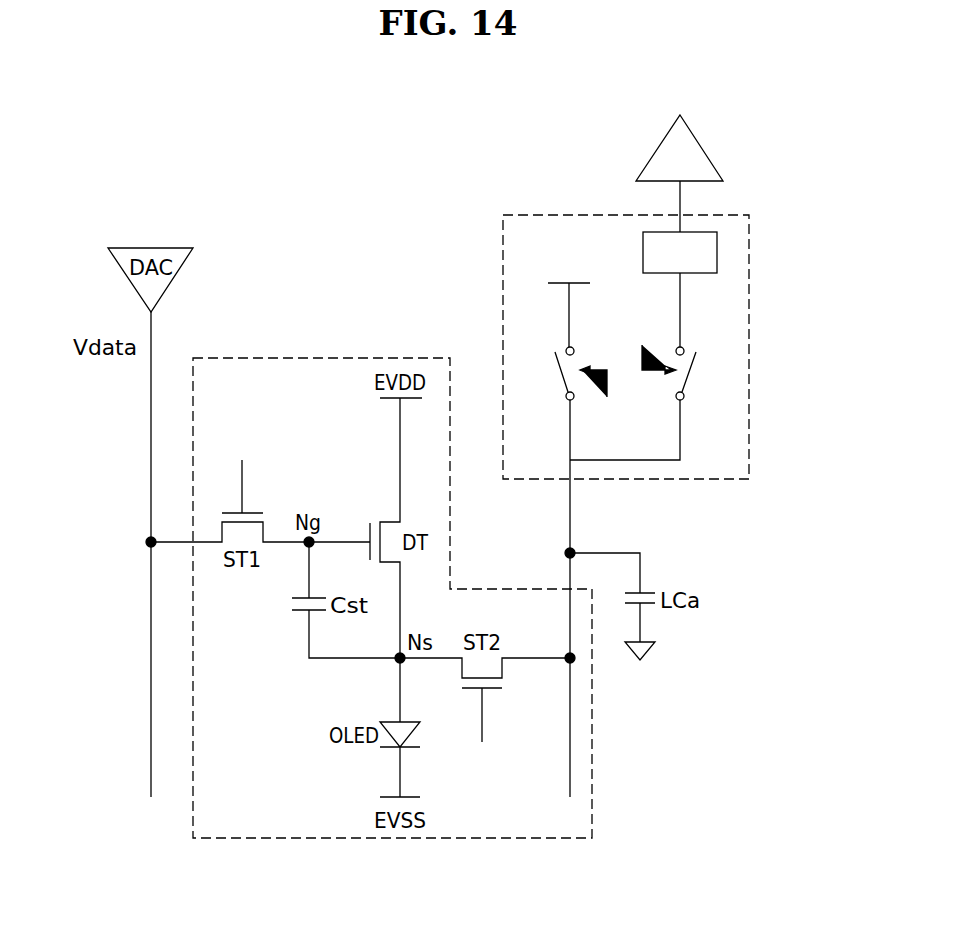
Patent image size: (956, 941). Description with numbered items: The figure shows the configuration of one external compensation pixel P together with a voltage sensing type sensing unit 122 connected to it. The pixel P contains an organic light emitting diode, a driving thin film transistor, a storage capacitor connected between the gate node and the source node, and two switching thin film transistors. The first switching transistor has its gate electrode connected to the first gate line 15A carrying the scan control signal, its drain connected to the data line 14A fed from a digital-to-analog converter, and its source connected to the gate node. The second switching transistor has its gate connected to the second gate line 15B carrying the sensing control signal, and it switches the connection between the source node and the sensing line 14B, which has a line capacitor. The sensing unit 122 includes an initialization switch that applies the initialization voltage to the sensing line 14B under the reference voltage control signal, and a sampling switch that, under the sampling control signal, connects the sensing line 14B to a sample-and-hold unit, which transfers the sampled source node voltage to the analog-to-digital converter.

The data line 14A is at (151, 468).
The sensing line 14B is at (571, 517).
The first gate line 15A is at (242, 470).
The second gate line 15B is at (482, 713).
The sensing unit 122 is at (749, 291).
The pixel P is at (592, 772).